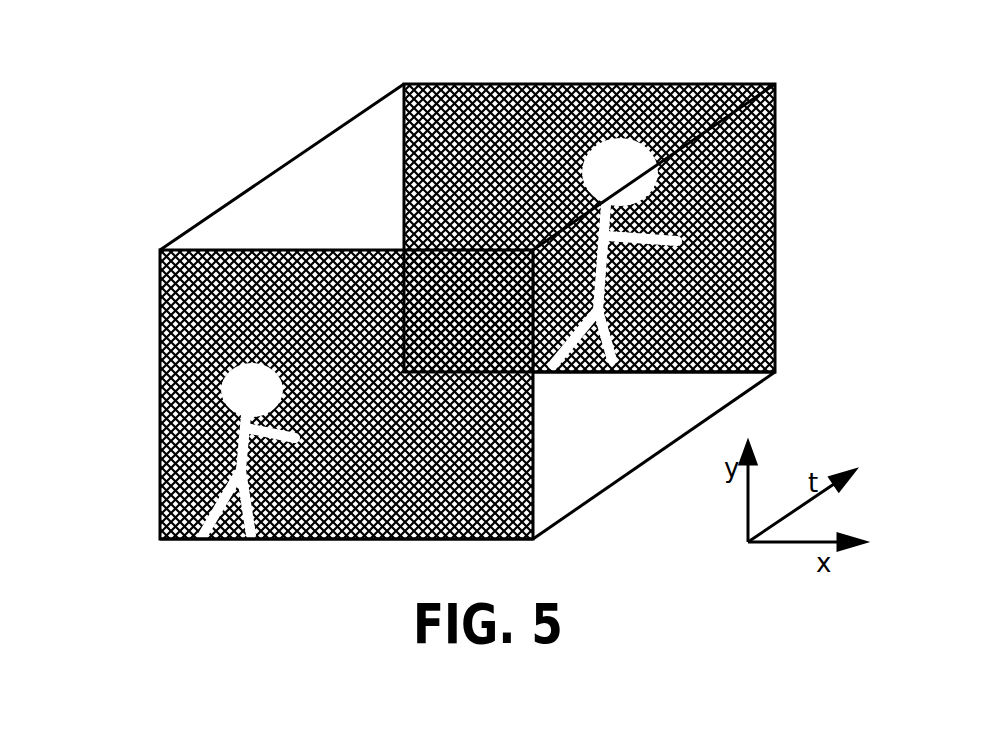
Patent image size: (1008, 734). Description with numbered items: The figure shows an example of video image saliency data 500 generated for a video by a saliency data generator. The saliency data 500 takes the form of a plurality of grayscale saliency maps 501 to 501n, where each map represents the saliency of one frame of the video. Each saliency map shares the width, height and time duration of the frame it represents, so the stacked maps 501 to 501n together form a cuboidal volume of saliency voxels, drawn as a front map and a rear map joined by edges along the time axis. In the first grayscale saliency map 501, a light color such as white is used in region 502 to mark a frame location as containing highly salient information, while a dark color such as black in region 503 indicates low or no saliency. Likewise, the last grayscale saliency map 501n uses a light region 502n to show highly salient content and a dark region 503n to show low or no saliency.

The video image saliency data 500 is at (303, 150).
The grayscale saliency map 501 is at (290, 394).
The region 502 is at (222, 388).
The region 503 is at (508, 530).
The grayscale saliency map 501n is at (776, 216).
The region 502n is at (593, 146).
The region 503n is at (757, 341).